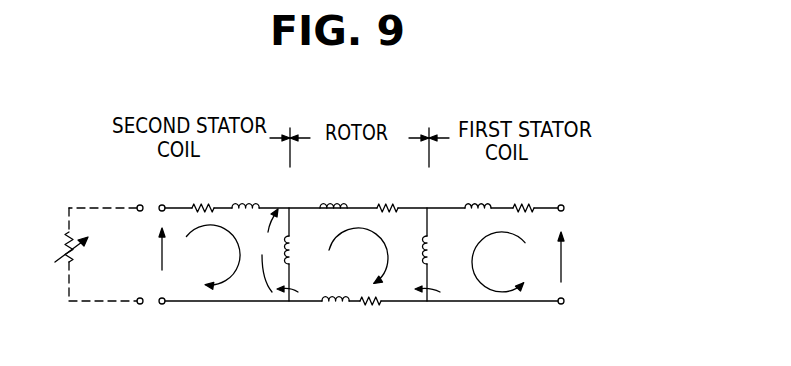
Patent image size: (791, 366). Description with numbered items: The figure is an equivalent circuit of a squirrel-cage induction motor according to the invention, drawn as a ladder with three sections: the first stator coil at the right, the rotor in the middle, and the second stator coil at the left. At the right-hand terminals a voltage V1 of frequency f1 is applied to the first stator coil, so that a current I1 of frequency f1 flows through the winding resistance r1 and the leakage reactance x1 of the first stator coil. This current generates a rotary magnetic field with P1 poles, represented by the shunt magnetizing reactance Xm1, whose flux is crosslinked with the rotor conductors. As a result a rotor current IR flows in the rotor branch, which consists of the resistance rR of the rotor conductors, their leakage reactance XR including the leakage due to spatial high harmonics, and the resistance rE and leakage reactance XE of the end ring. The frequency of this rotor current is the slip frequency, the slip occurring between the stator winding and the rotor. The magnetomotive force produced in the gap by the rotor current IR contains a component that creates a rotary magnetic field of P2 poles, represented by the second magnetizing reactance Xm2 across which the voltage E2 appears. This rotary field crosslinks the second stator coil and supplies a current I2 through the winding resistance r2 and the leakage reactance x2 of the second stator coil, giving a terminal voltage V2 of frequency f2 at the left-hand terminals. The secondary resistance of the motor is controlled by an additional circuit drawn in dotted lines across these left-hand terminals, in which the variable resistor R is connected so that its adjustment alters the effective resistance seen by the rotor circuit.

The variable resistor R is at (58, 249).
The second stator coil voltage V2 is at (145, 249).
The second stator coil frequency f2 is at (136, 282).
The winding resistance of the second stator coil r2 is at (202, 193).
The leakage reactance of the second stator coil x2 is at (245, 191).
The second stator coil current I2 is at (213, 257).
The second stator induced voltage E2 is at (261, 250).
The second magnetizing reactance Xm2 is at (307, 254).
The leakage reactance of the rotor conductors XR is at (332, 191).
The resistance of the rotor conductors rR is at (386, 193).
The rotor current IR is at (358, 255).
The leakage reactance of the end ring XE is at (334, 315).
The resistance of the end ring rE is at (370, 315).
The first magnetizing reactance Xm1 is at (444, 254).
The leakage reactance of the first stator coil x1 is at (477, 192).
The winding resistance of the first stator coil r1 is at (523, 194).
The first stator coil current I1 is at (498, 262).
The first stator coil voltage V1 is at (576, 257).
The first stator coil frequency f1 is at (583, 286).
The number of poles of the second rotary magnetic field P2 is at (293, 345).
The number of poles of the first rotary magnetic field P1 is at (427, 345).